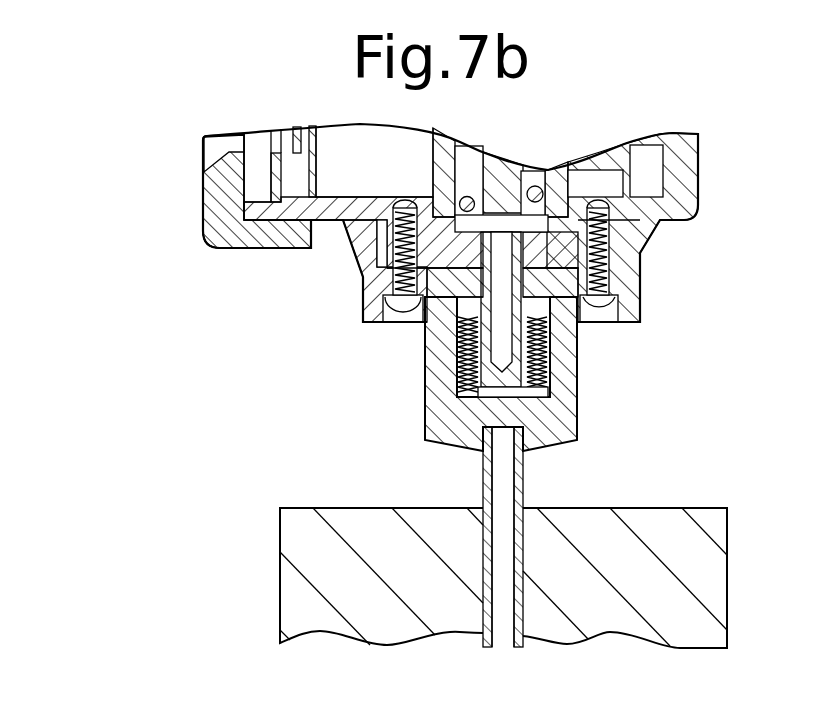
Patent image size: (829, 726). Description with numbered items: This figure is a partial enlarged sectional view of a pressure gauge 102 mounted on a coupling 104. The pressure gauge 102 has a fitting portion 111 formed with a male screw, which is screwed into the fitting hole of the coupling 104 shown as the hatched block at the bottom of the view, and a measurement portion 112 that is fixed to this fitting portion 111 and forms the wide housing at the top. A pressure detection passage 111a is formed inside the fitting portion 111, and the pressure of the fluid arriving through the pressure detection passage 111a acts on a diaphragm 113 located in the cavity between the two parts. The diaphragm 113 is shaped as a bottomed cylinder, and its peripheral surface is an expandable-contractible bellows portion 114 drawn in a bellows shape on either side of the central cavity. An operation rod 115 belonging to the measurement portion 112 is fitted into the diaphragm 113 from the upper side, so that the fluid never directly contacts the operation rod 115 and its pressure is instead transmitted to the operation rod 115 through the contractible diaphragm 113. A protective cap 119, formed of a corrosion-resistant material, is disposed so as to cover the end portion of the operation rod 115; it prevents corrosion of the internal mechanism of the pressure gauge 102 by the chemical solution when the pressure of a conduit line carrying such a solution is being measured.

The pressure gauge 102 is at (158, 268).
The coupling 104 is at (700, 508).
The fitting portion 111 is at (545, 480).
The pressure detection passage 111a is at (485, 520).
The measurement portion 112 is at (203, 165).
The diaphragm 113 is at (460, 350).
The bellows portion 114 is at (458, 377).
The operation rod 115 is at (500, 347).
The protective cap 119 is at (507, 381).